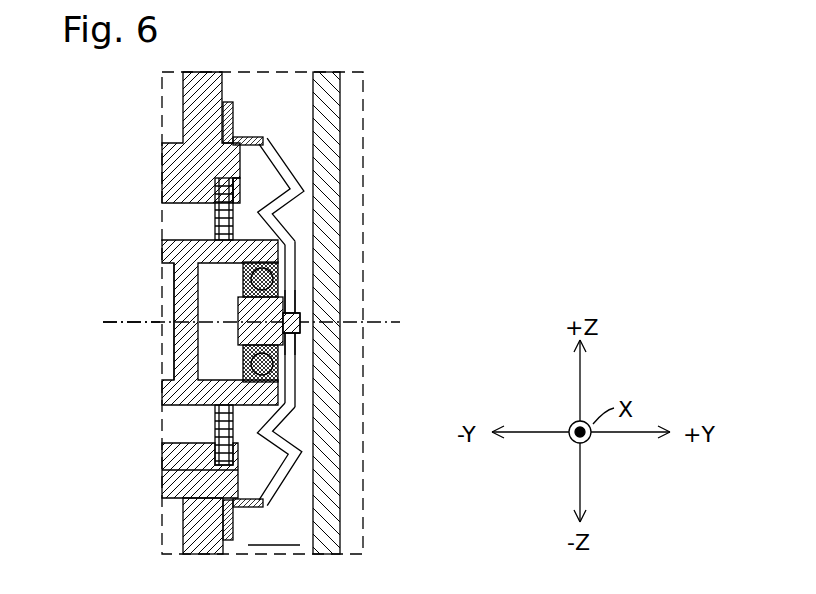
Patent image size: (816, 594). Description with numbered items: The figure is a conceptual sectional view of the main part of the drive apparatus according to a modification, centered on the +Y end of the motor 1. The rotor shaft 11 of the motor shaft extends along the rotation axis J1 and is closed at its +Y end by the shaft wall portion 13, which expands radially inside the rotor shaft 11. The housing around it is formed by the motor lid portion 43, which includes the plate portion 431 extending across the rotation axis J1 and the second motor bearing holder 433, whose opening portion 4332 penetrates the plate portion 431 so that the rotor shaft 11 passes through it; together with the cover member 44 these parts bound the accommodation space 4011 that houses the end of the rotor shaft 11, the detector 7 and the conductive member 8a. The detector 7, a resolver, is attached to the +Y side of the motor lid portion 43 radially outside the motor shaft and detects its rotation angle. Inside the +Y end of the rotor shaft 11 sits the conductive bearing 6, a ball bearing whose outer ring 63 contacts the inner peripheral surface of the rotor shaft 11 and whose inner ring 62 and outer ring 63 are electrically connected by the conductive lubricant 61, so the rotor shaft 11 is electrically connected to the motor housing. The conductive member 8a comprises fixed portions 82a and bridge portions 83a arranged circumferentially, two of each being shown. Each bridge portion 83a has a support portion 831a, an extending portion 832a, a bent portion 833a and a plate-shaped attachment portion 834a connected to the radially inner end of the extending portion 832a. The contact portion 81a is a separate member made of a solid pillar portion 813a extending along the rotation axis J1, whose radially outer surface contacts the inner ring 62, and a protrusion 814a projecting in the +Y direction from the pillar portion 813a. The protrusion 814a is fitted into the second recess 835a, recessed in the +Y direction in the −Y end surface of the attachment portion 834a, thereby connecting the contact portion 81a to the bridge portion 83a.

The motor 1 is at (252, 415).
The conductive bearing 6 is at (180, 332).
The detector 7 is at (215, 425).
The rotor shaft 11 is at (165, 253).
The shaft wall portion 13 is at (185, 291).
The rotation axis J1 is at (110, 320).
The motor lid portion 43 is at (170, 527).
The cover member 44 is at (328, 513).
The lubricant 61 is at (243, 352).
The inner ring 62 is at (243, 363).
The outer ring 63 is at (262, 381).
The plate portion 431 is at (195, 80).
The second motor bearing holder 433 is at (175, 453).
The opening portion 4332 is at (175, 477).
The accommodation space 4011 is at (274, 534).
The conductive member 8a is at (384, 321).
The contact portion 81a is at (391, 345).
The fixed portion 82a is at (233, 122).
The bridge portion 83a is at (366, 318).
The pillar portion 813a is at (285, 340).
The protrusion 814a is at (300, 327).
The support portion 831a is at (250, 130).
The extending portion 832a is at (296, 255).
The bent portion 833a is at (305, 204).
The attachment portion 834a is at (298, 305).
The second recess 835a is at (364, 316).